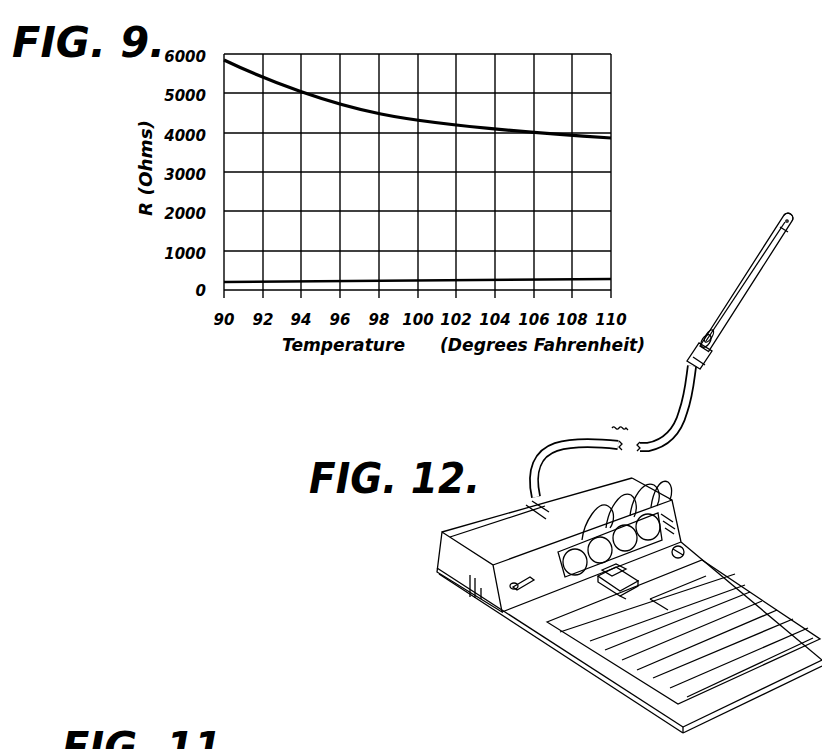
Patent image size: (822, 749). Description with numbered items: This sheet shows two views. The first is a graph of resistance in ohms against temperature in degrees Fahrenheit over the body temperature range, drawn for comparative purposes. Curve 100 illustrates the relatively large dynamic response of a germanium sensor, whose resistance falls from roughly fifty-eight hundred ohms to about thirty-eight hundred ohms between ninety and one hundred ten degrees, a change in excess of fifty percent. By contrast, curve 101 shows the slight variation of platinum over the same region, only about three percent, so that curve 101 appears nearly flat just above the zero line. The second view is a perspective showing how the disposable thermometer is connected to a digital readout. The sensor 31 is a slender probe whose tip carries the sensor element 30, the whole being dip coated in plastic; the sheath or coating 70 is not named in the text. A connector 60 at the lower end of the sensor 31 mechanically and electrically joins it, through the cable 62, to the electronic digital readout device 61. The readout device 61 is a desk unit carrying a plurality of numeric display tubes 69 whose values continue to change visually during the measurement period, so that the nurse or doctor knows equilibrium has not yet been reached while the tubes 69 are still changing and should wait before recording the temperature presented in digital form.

In FIG. 9, the curve 100 is at (472, 122).
In FIG. 9, the curve 101 is at (480, 278).
In FIG. 12, the sensor element 30 is at (741, 227).
In FIG. 12, the sensor 31 is at (755, 267).
In FIG. 12, the probe sheath 70 is at (737, 302).
In FIG. 12, the connector 60 is at (712, 358).
In FIG. 12, the cable 62 is at (587, 437).
In FIG. 12, the numeric display tubes 69 is at (618, 492).
In FIG. 12, the electronic digital readout device 61 is at (500, 638).